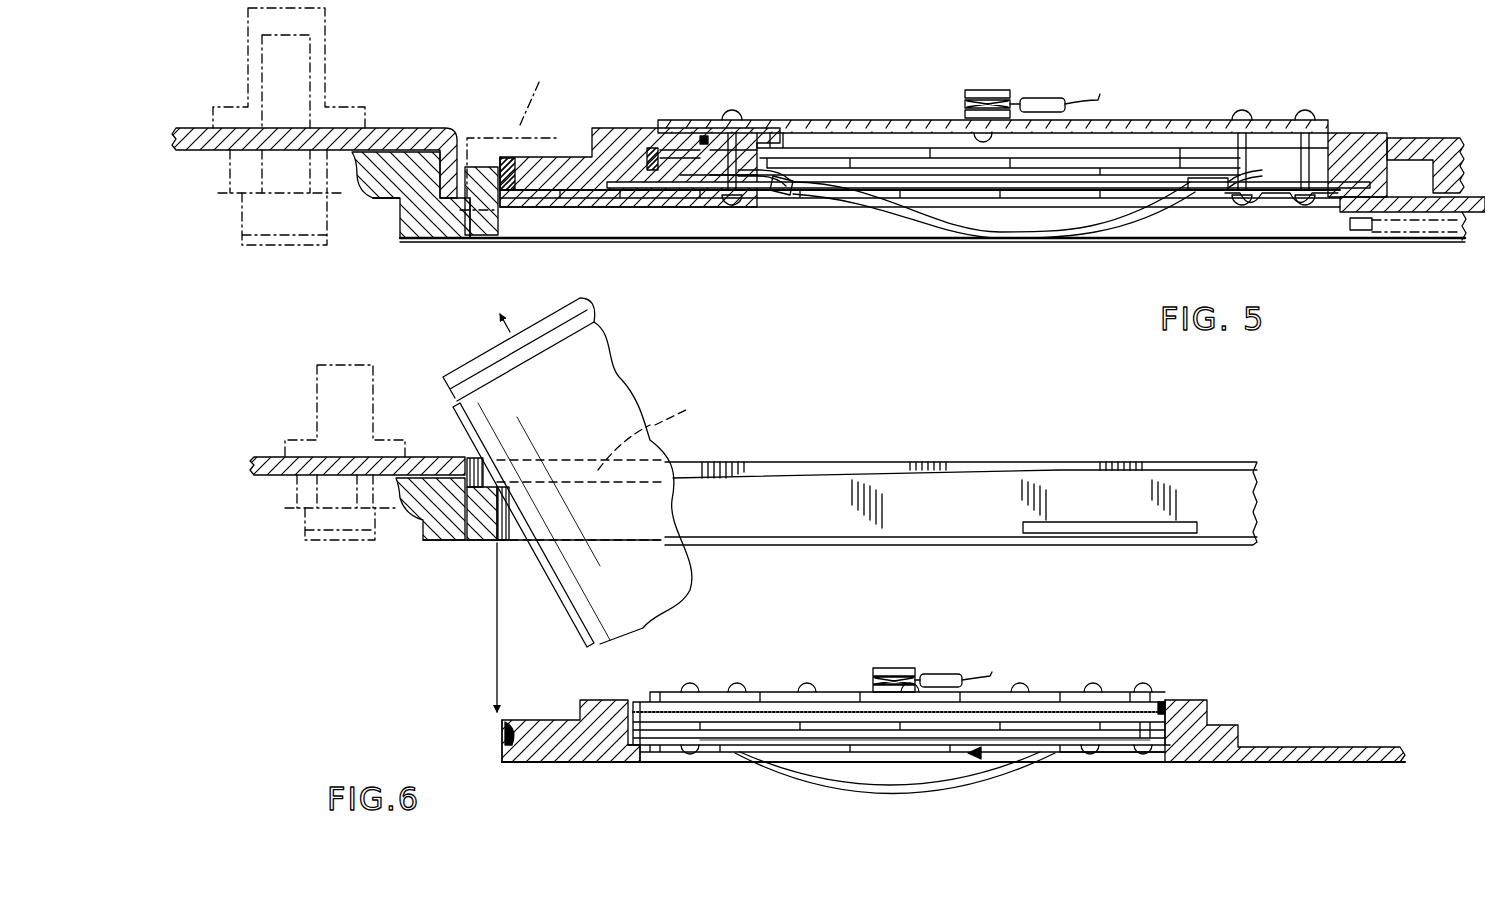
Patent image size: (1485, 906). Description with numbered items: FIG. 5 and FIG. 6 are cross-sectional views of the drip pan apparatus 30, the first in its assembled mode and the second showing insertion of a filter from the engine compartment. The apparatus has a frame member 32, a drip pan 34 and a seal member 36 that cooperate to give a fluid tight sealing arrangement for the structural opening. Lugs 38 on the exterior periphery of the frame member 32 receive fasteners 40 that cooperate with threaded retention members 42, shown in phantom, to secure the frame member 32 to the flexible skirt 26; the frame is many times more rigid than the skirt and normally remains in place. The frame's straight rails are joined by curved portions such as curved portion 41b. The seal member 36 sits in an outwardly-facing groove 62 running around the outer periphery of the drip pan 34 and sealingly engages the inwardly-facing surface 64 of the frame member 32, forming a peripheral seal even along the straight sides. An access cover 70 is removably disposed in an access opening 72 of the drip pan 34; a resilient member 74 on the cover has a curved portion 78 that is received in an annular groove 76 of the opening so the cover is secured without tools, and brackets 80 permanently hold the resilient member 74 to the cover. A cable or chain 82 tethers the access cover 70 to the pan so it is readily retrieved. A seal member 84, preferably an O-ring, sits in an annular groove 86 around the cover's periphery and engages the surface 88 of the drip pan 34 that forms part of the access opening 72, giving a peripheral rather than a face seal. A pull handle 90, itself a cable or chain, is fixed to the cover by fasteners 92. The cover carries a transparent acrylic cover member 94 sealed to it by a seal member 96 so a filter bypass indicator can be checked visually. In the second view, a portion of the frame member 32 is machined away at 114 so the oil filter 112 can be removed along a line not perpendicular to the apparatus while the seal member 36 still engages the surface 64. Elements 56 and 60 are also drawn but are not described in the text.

In FIG. 5, the skirt 26 is at (382, 128).
In FIG. 6, the skirt 26 is at (260, 457).
In FIG. 5, the drip pan apparatus 30 is at (412, 250).
In FIG. 6, the drip pan apparatus 30 is at (394, 578).
In FIG. 5, the frame member 32 is at (448, 243).
In FIG. 6, the frame member 32 is at (447, 552).
In FIG. 5, the drip pan 34 is at (1390, 135).
In FIG. 6, the drip pan 34 is at (1242, 766).
In FIG. 5, the seal member 36 is at (518, 207).
In FIG. 6, the seal member 36 is at (503, 734).
In FIG. 5, the lugs 38 is at (232, 193).
In FIG. 6, the lugs 38 is at (295, 490).
In FIG. 5, the fasteners 40 is at (272, 245).
In FIG. 6, the fasteners 40 is at (312, 540).
In FIG. 5, the curved portion 41b is at (385, 215).
In FIG. 5, the threaded retention members 42 is at (330, 40).
In FIG. 6, the threaded retention members 42 is at (300, 380).
In FIG. 6, the plate 56 is at (1080, 533).
In FIG. 5, the retainer 60 is at (498, 130).
In FIG. 5, the outwardly-facing groove 62 is at (520, 160).
In FIG. 6, the outwardly-facing groove 62 is at (530, 720).
In FIG. 5, the inwardly-facing surface 64 is at (477, 205).
In FIG. 6, the inwardly-facing surface 64 is at (503, 545).
In FIG. 5, the access cover 70 is at (836, 120).
In FIG. 6, the access cover 70 is at (797, 690).
In FIG. 5, the access opening 72 is at (1340, 133).
In FIG. 6, the access opening 72 is at (1175, 700).
In FIG. 5, the resilient member 74 is at (1022, 192).
In FIG. 6, the resilient member 74 is at (983, 756).
In FIG. 5, the annular groove 76 is at (903, 200).
In FIG. 6, the annular groove 76 is at (578, 758).
In FIG. 5, the curved portion 78 is at (978, 200).
In FIG. 6, the curved portion 78 is at (854, 760).
In FIG. 5, the brackets 80 is at (1276, 202).
In FIG. 6, the brackets 80 is at (1124, 760).
In FIG. 5, the cable or chain 82 is at (1100, 94).
In FIG. 6, the cable or chain 82 is at (978, 672).
In FIG. 5, the seal member 84 is at (655, 148).
In FIG. 6, the seal member 84 is at (1208, 720).
In FIG. 5, the annular groove 86 is at (704, 134).
In FIG. 6, the annular groove 86 is at (706, 725).
In FIG. 5, the surface 88 is at (628, 128).
In FIG. 6, the surface 88 is at (615, 705).
In FIG. 5, the pull handle 90 is at (875, 218).
In FIG. 6, the pull handle 90 is at (933, 782).
In FIG. 5, the fasteners 92 is at (742, 110).
In FIG. 6, the fasteners 92 is at (1102, 690).
In FIG. 5, the transparent cover member 94 is at (875, 120).
In FIG. 6, the transparent cover member 94 is at (846, 690).
In FIG. 5, the seal member 96 is at (712, 135).
In FIG. 6, the oil filter 112 is at (617, 366).
In FIG. 5, the machined-away portion 114 is at (532, 100).
In FIG. 6, the machined-away portion 114 is at (683, 480).